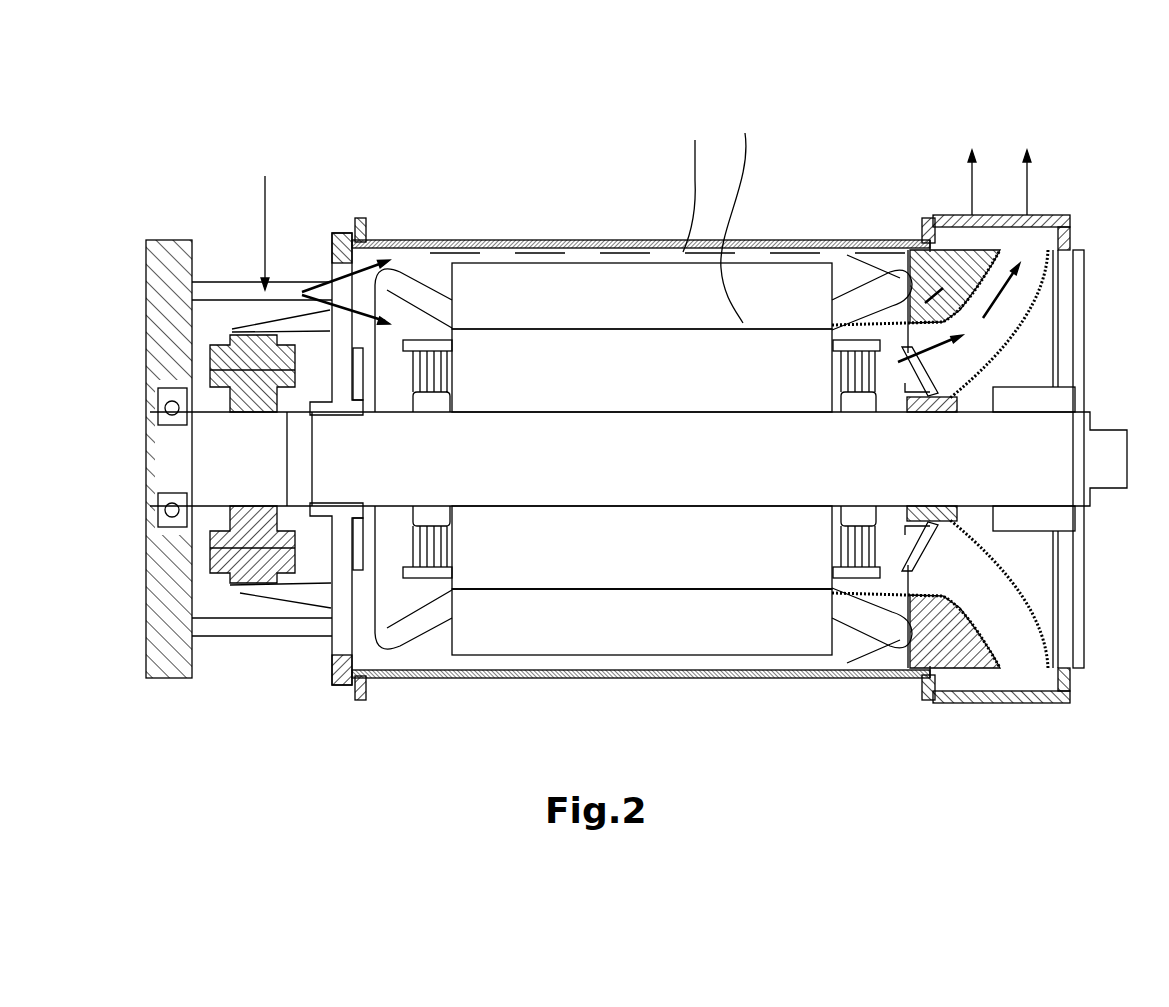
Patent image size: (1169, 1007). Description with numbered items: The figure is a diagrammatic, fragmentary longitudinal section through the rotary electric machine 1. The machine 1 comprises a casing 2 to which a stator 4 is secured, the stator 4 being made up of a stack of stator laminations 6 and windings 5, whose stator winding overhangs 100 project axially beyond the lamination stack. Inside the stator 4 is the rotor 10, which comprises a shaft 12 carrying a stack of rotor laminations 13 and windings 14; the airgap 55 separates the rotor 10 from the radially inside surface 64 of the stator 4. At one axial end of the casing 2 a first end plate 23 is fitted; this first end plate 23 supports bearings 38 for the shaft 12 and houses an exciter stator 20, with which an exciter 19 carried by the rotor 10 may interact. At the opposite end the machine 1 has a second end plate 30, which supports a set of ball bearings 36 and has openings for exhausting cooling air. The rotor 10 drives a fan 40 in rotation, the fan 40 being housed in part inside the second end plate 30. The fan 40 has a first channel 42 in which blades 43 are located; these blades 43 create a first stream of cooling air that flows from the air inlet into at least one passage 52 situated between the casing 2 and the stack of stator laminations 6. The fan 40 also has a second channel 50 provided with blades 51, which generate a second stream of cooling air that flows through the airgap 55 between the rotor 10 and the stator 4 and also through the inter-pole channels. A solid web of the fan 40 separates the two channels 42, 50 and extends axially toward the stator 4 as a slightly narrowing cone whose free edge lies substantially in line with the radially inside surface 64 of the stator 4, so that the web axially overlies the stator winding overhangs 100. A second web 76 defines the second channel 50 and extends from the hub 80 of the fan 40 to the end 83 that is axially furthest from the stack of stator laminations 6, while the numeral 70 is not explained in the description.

The rotary electric machine 1 is at (375, 162).
The casing 2 is at (565, 242).
The stator 4 is at (472, 292).
The windings 5 is at (897, 290).
The stack of stator laminations 6 is at (803, 286).
The rotor 10 is at (434, 590).
The shaft 12 is at (1105, 470).
The stack of rotor laminations 13 is at (497, 553).
The windings 14 is at (832, 592).
The exciter 19 is at (262, 393).
The exciter stator 20 is at (232, 328).
The first end plate 23 is at (172, 620).
The second end plate 30 is at (1067, 668).
The set of ball bearings 36 is at (1085, 412).
The bearings 38 is at (172, 527).
The fan 40 is at (1068, 247).
The first channel 42 is at (930, 248).
The blades 43 is at (998, 240).
The second channel 50 is at (1040, 303).
The blades 51 is at (1015, 648).
The passage 52 is at (525, 246).
The airgap 55 is at (840, 312).
The radially inside surface 64 is at (710, 592).
The fan housing wall 70 is at (937, 702).
The second web 76 is at (1010, 614).
The hub 80 is at (995, 510).
The end 83 is at (1053, 665).
The stator winding overhangs 100 is at (870, 622).